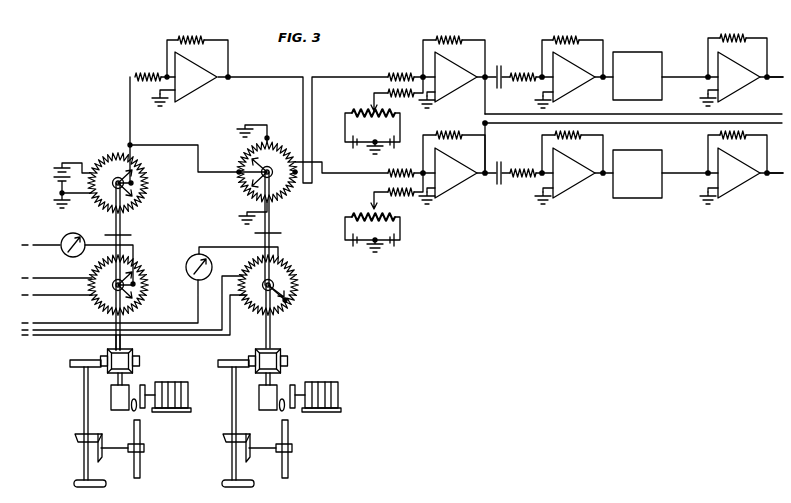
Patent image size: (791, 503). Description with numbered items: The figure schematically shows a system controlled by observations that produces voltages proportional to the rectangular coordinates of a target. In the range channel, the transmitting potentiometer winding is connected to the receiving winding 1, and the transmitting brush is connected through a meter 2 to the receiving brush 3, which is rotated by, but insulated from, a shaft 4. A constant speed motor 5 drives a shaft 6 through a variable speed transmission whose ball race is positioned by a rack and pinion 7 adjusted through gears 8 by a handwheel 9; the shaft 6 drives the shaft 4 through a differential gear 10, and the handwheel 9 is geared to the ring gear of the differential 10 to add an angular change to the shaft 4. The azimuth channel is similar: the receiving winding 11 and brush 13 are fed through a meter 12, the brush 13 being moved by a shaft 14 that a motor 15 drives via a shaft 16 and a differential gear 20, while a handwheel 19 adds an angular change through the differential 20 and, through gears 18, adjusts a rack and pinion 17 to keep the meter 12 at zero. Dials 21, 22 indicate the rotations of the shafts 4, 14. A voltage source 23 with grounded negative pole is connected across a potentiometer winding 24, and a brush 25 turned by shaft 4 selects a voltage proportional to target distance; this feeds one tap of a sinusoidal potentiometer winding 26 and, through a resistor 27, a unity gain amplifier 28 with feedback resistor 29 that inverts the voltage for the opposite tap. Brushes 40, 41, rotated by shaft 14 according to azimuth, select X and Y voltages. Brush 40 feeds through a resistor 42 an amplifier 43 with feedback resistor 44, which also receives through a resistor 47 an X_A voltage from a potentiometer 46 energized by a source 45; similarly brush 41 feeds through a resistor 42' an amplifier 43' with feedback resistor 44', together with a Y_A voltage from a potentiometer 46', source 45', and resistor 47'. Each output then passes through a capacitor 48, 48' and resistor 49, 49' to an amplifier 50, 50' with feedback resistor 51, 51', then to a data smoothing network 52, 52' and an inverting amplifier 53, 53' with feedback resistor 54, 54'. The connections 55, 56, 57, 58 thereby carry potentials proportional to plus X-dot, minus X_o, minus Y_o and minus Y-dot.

The winding of the receiving potentiometer 1 is at (135, 274).
The meter 2 is at (66, 234).
The brush of the receiving potentiometer 3 is at (137, 296).
The shaft 4 is at (111, 340).
The constant speed motor 5 is at (172, 412).
The shaft 6 is at (115, 380).
The rack and pinion 7 is at (138, 432).
The gears 8 is at (96, 436).
The handwheel 9 is at (84, 486).
The differential gear 10 is at (131, 358).
The winding of the receiving potentiometer 11 is at (287, 276).
The meter 12 is at (194, 253).
The brush of the receiving potentiometer 13 is at (287, 299).
The shaft 14 is at (271, 340).
The motor 15 is at (315, 406).
The shaft 16 is at (275, 384).
The rack and pinion 17 is at (291, 450).
The gears 18 is at (242, 436).
The handwheel 19 is at (234, 486).
The differential gear 20 is at (286, 359).
The dial 21 is at (128, 236).
The dial 22 is at (275, 236).
The source of voltage 23 is at (56, 181).
The potentiometer winding 24 is at (143, 172).
The brush 25 is at (143, 191).
The potentiometer winding 26 is at (277, 139).
The resistor 27 is at (153, 73).
The unity gain amplifier 28 is at (191, 85).
The feedback resistor 29 is at (196, 26).
The brush 40 is at (244, 184).
The brush 41 is at (238, 165).
The resistor 42 is at (400, 68).
The amplifier 43 is at (448, 80).
The feedback resistor 44 is at (454, 46).
The source of voltage 45 is at (370, 154).
The potentiometer 46 is at (368, 115).
The resistor 47 is at (403, 101).
The resistor 42' is at (404, 160).
The amplifier 43' is at (448, 176).
The feedback resistor 44' is at (454, 142).
The source of voltage 45' is at (371, 253).
The potentiometer 46' is at (367, 212).
The resistor 47' is at (401, 199).
The capacitor 48 is at (500, 65).
The resistor 49 is at (521, 89).
The amplifier 50 is at (565, 80).
The feedback resistor 51 is at (572, 46).
The data smoothing network 52 is at (637, 62).
The amplifier 53 is at (730, 79).
The feedback resistor 54 is at (737, 46).
The connection 55 is at (782, 78).
The connection 56 is at (748, 113).
The connection 57 is at (666, 123).
The capacitor 48' is at (501, 166).
The resistor 49' is at (519, 187).
The amplifier 50' is at (565, 176).
The feedback resistor 51' is at (559, 150).
The data smoothing network 52' is at (637, 165).
The amplifier 53' is at (730, 176).
The feedback resistor 54' is at (724, 150).
The connection 58 is at (779, 173).